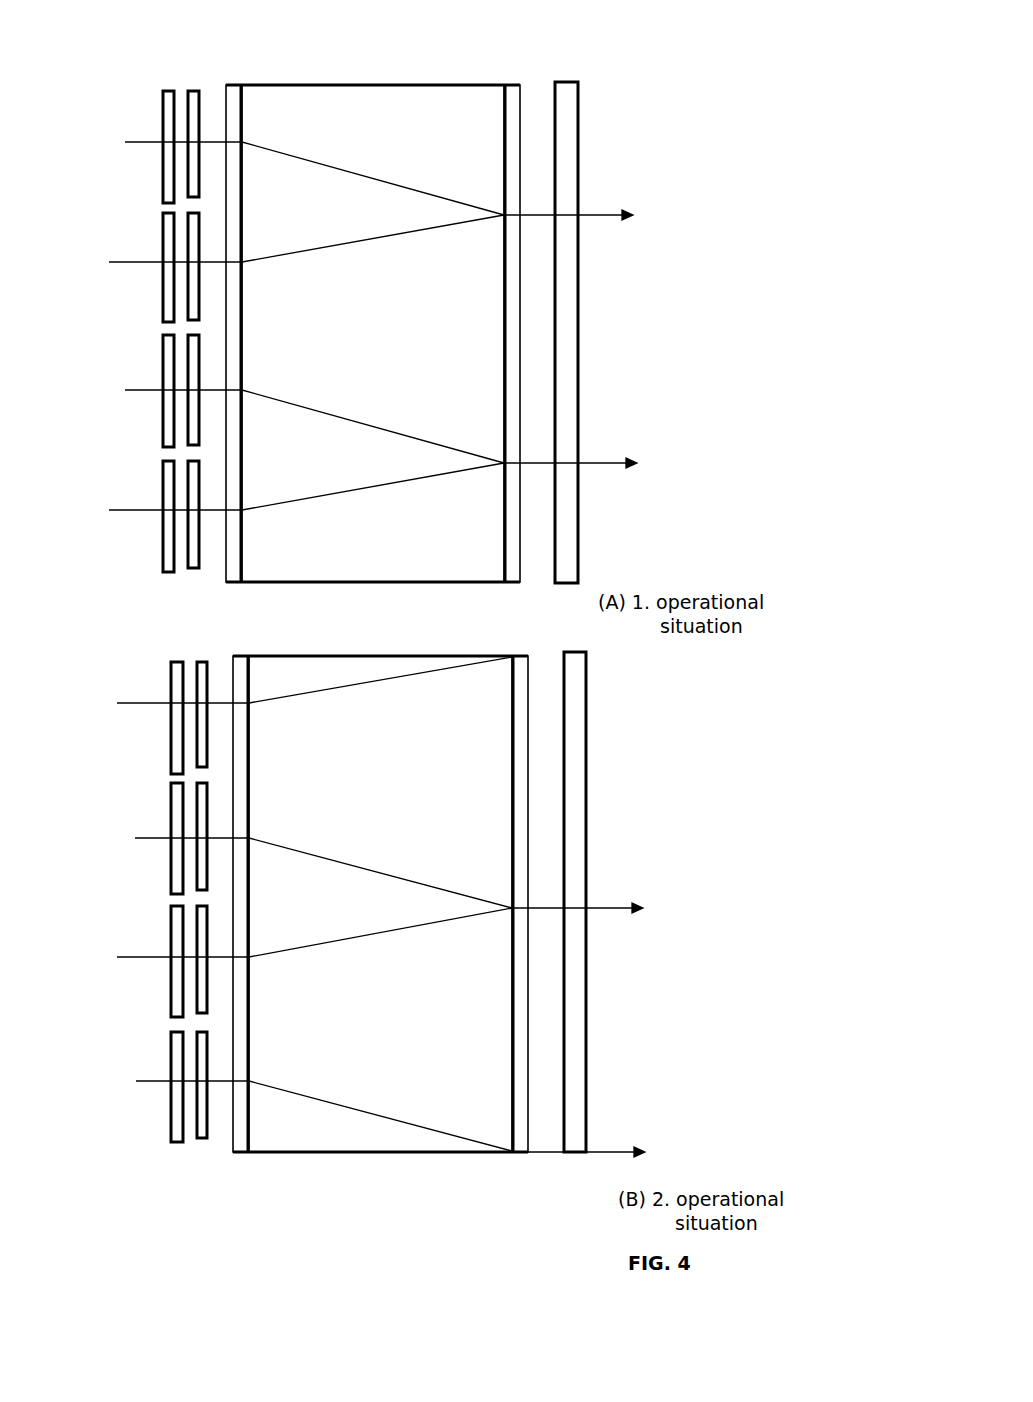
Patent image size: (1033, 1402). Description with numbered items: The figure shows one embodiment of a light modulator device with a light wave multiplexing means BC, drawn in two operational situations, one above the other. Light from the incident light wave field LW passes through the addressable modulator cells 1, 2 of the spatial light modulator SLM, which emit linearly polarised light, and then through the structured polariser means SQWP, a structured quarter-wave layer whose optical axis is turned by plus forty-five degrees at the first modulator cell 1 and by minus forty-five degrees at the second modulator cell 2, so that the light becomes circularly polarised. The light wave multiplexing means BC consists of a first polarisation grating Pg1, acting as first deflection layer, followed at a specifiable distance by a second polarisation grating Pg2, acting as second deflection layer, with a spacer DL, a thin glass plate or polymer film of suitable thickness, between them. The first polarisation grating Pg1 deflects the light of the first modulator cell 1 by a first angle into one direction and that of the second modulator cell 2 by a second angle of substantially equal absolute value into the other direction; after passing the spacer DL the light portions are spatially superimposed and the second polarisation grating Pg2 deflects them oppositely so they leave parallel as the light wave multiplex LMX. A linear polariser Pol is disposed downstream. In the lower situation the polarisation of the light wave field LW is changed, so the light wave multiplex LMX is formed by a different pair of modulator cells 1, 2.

The first modulator cell 1 is at (166, 127).
The second modulator cell 2 is at (168, 298).
The spatial light modulator SLM is at (173, 1150).
The structured polariser means SQWP is at (204, 1206).
The first polarisation grating Pg1 is at (236, 100).
The second polarisation grating Pg2 is at (512, 100).
The light wave multiplexing means BC is at (518, 82).
The spacer DL is at (291, 642).
The linear polariser Pol is at (567, 95).
The light wave field LW is at (150, 262).
The light wave multiplex LMX is at (600, 214).